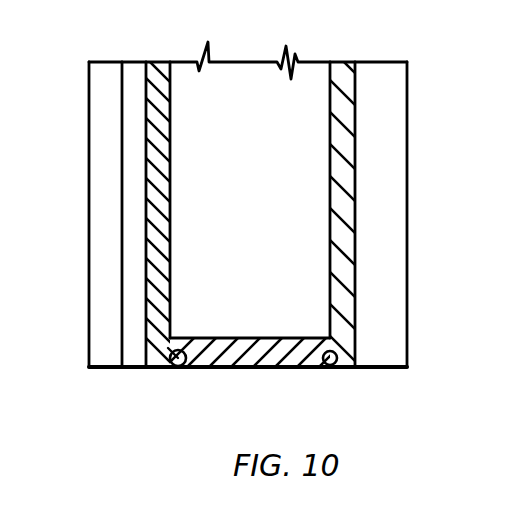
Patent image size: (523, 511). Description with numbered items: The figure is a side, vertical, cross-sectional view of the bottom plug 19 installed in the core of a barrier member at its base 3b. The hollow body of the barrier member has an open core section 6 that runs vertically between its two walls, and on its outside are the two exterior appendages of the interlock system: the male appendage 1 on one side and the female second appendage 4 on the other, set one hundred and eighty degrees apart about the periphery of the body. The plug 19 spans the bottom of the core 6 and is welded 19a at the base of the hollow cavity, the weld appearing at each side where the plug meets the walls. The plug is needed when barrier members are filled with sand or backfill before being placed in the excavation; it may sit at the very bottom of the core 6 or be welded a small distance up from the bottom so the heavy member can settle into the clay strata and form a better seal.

The exterior appendage 1 is at (88, 123).
The base 3b is at (133, 370).
The second appendage 4 is at (373, 82).
The open core section 6 is at (248, 130).
The bottom plug 19 is at (300, 368).
The weld 19a is at (177, 372).